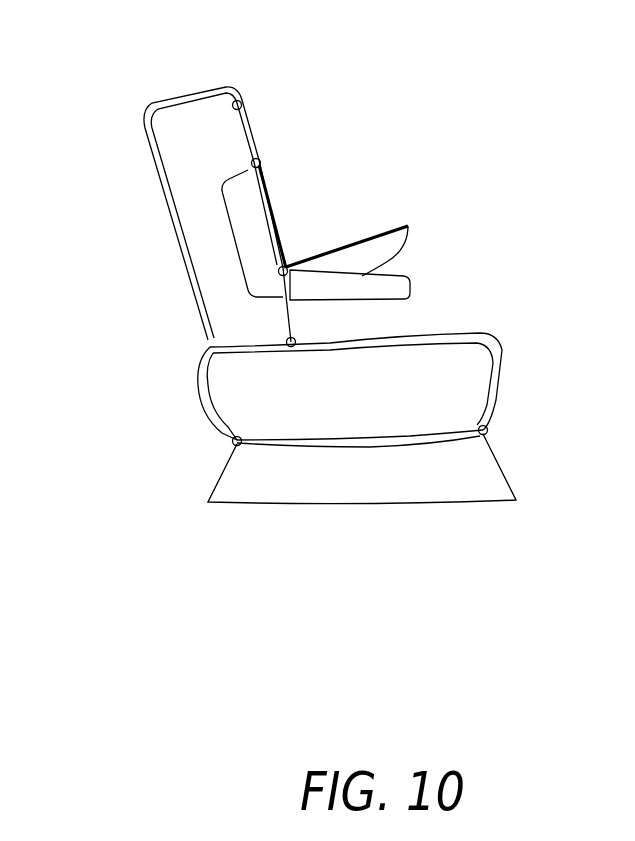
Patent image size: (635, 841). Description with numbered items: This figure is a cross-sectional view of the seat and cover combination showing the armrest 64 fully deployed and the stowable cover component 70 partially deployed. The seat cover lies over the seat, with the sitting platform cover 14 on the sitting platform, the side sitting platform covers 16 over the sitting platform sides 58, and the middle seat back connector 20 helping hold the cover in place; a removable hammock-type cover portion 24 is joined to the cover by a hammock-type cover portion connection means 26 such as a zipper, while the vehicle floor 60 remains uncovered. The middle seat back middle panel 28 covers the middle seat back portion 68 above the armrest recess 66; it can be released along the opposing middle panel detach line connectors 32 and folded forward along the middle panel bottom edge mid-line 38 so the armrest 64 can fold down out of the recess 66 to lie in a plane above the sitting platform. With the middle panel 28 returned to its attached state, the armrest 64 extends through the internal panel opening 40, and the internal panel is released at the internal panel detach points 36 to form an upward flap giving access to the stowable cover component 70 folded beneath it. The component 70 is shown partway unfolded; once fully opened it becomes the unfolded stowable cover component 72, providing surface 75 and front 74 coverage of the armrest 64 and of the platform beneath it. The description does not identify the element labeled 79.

The sitting platform cover 14 is at (497, 344).
The side sitting platform covers 16 is at (503, 378).
The middle seat back connector 20 is at (143, 112).
The removable hammock-type cover portion 24 is at (505, 472).
The hammock-type cover portion connection means 26 is at (489, 429).
The middle seat back middle panel 28 is at (188, 98).
The middle panel detach line connectors 32 is at (242, 105).
The internal panel detach points 36 is at (261, 163).
The middle panel bottom edge mid-line 38 is at (292, 348).
The internal panel opening 40 is at (288, 260).
The sitting platform sides 58 is at (224, 393).
The vehicle floor 60 is at (229, 482).
The armrest 64 is at (407, 288).
The armrest recess 66 is at (240, 219).
The middle seat back portion 68 is at (185, 212).
The stowable cover component 70 is at (341, 266).
The unfolded stowable cover component 72 is at (405, 239).
The front 74 is at (410, 223).
The surface 75 is at (387, 228).
The back shell 79 is at (148, 137).